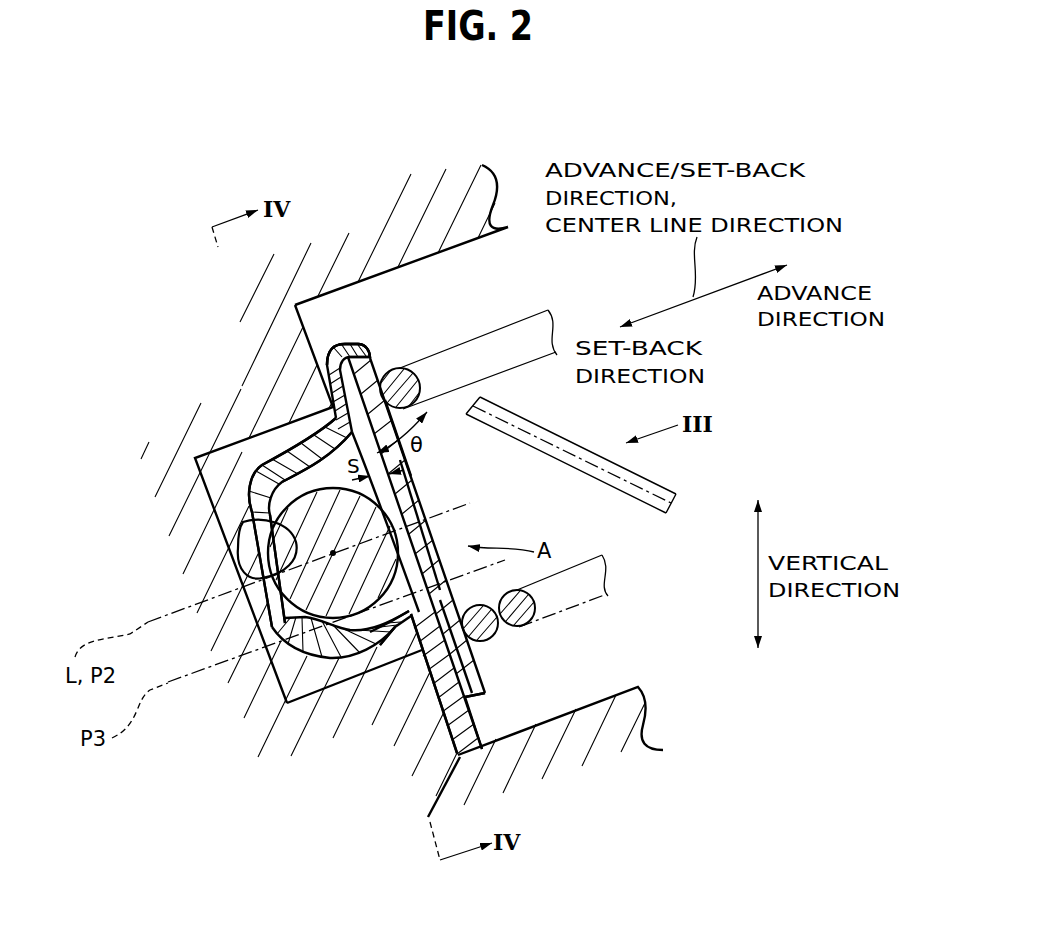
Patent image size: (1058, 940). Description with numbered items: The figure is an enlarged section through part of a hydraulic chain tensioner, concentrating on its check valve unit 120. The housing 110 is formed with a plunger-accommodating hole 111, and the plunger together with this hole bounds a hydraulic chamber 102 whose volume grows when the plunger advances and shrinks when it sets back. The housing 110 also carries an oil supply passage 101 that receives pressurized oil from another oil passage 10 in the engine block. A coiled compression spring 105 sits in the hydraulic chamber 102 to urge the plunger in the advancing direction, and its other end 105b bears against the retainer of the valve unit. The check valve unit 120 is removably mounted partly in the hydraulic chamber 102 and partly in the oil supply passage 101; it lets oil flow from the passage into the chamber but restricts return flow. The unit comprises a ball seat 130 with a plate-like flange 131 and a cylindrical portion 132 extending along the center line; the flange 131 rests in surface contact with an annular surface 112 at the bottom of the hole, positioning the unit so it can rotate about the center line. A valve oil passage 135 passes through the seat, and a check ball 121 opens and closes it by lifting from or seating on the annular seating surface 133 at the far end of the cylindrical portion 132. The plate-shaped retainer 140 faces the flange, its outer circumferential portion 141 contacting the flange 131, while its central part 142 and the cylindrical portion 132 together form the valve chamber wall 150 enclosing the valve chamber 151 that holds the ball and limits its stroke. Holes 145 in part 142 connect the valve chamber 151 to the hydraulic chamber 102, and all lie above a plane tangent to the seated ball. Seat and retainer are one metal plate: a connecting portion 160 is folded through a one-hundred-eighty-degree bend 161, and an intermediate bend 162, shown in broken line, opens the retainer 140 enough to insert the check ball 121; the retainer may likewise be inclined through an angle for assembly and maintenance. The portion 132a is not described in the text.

The oil passage 10 is at (240, 603).
The oil supply passage 101 is at (225, 452).
The hydraulic chamber 102 is at (465, 273).
The coiled compression spring 105 is at (608, 598).
The other end of the spring 105b is at (403, 368).
The housing 110 is at (306, 688).
The plunger-accommodating hole 111 is at (593, 704).
The annular surface 112 is at (470, 694).
The check valve unit 120 is at (240, 510).
The check ball 121 is at (262, 480).
The ball seat 130 is at (280, 445).
The flange 131 is at (468, 730).
The cylindrical portion 132 is at (357, 650).
The pressing strip 132a is at (248, 552).
The annular seating surface 133 is at (280, 580).
The valve oil passage 135 is at (262, 527).
The retainer 140 is at (421, 506).
The outer circumferential portion 141 is at (468, 657).
The part of the valve chamber wall 142 is at (432, 511).
The holes 145 is at (411, 476).
The valve chamber wall 150 is at (394, 628).
The valve chamber 151 is at (392, 668).
The connecting portion 160 is at (348, 354).
The bend 161 is at (342, 345).
The bend 162 is at (352, 352).